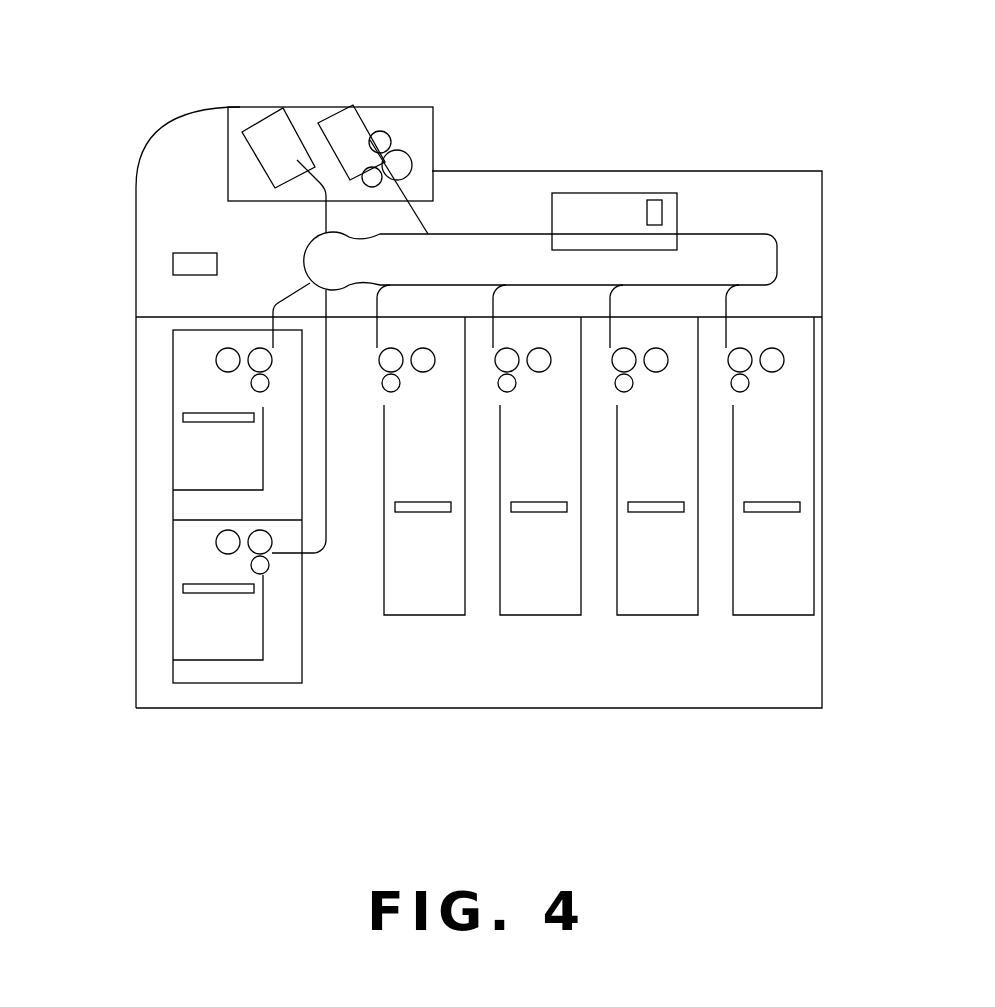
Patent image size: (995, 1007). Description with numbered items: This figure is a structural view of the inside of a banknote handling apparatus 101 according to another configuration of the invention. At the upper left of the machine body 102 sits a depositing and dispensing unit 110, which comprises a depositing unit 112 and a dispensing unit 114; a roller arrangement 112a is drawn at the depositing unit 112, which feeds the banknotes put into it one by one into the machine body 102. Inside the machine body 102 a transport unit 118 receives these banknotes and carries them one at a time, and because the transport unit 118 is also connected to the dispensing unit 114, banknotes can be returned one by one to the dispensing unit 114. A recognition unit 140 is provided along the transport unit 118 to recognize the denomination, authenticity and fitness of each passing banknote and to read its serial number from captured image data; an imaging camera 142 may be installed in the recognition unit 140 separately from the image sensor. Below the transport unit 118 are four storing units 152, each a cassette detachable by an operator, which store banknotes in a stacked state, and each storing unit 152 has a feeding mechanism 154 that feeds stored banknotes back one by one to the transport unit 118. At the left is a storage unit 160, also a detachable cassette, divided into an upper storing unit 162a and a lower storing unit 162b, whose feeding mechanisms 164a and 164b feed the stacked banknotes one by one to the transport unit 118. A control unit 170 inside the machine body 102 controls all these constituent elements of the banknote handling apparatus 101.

The banknote handling apparatus 101 is at (556, 60).
The machine body 102 is at (652, 171).
The depositing and dispensing unit 110 is at (233, 153).
The depositing unit 112 is at (342, 124).
The feed roller 112a is at (386, 131).
The dispensing unit 114 is at (263, 128).
The transport unit 118 is at (480, 233).
The recognition unit 140 is at (578, 212).
The imaging camera 142 is at (663, 212).
The storing unit 152 is at (450, 566).
The feeding mechanism 154 is at (400, 384).
The storage unit 160 is at (237, 685).
The upper storing unit 162a is at (257, 469).
The lower storing unit 162b is at (253, 637).
The feeding mechanism 164a is at (215, 360).
The feeding mechanism 164b is at (215, 542).
The control unit 170 is at (196, 253).